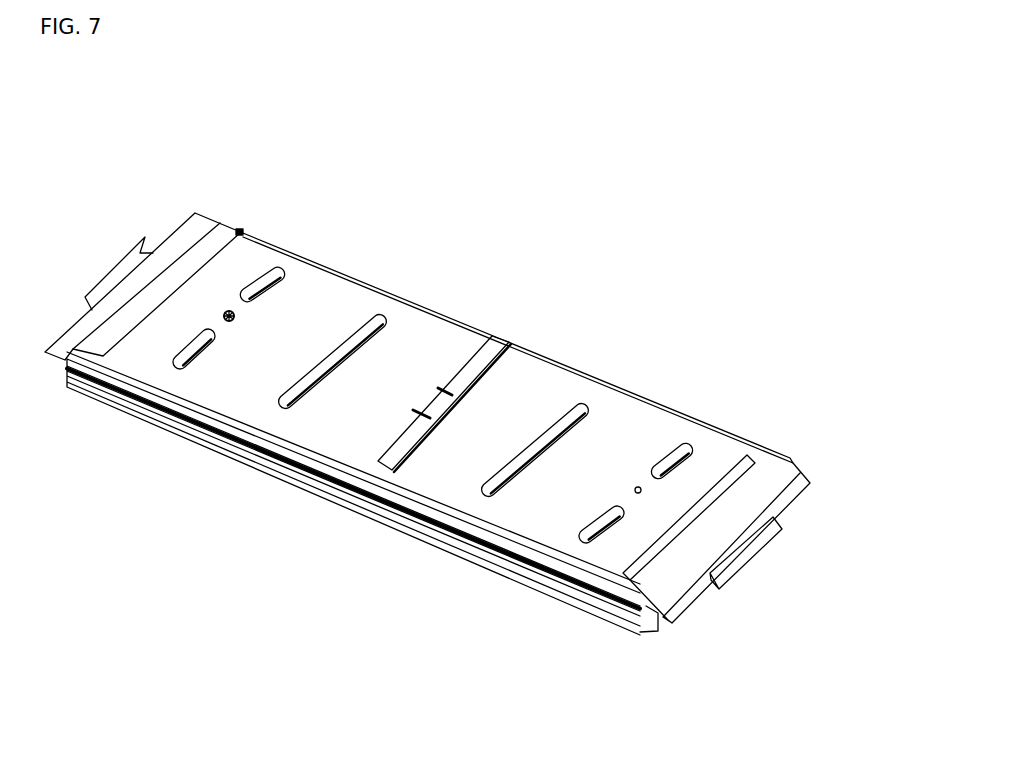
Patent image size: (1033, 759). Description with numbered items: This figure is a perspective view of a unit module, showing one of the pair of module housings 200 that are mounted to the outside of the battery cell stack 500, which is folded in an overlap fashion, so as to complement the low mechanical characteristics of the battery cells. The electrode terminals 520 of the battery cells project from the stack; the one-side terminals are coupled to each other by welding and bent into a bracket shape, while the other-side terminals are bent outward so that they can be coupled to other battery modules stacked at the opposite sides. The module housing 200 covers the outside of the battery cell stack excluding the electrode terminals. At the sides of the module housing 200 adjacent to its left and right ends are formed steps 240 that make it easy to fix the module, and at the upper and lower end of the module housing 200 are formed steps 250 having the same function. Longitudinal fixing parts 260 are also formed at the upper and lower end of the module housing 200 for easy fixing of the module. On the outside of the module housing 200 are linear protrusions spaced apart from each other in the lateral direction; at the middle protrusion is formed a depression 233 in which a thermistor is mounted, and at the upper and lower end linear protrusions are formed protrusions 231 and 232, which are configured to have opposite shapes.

The module housing 200 is at (250, 476).
The protrusion 231 is at (229, 311).
The protrusion 232 is at (638, 487).
The depression 233 is at (438, 389).
The step 240 is at (410, 513).
The step 250 is at (190, 228).
The longitudinal fixing part 260 is at (239, 232).
The battery cell stack 500 is at (815, 458).
The electrode terminal 520 is at (737, 568).